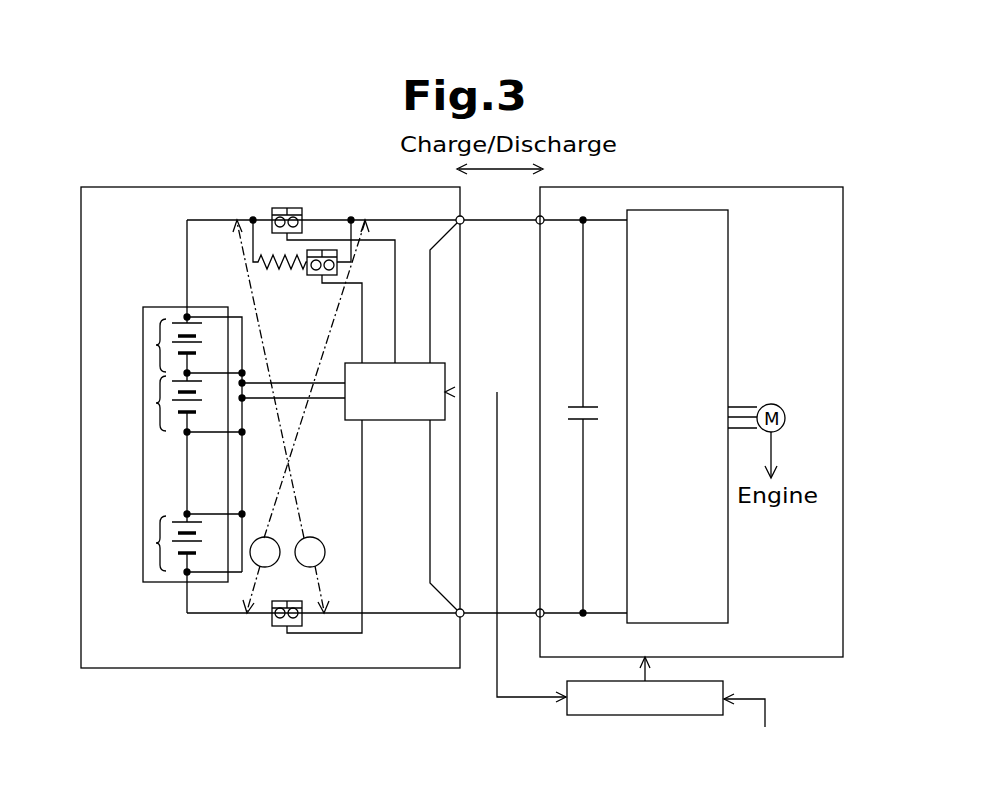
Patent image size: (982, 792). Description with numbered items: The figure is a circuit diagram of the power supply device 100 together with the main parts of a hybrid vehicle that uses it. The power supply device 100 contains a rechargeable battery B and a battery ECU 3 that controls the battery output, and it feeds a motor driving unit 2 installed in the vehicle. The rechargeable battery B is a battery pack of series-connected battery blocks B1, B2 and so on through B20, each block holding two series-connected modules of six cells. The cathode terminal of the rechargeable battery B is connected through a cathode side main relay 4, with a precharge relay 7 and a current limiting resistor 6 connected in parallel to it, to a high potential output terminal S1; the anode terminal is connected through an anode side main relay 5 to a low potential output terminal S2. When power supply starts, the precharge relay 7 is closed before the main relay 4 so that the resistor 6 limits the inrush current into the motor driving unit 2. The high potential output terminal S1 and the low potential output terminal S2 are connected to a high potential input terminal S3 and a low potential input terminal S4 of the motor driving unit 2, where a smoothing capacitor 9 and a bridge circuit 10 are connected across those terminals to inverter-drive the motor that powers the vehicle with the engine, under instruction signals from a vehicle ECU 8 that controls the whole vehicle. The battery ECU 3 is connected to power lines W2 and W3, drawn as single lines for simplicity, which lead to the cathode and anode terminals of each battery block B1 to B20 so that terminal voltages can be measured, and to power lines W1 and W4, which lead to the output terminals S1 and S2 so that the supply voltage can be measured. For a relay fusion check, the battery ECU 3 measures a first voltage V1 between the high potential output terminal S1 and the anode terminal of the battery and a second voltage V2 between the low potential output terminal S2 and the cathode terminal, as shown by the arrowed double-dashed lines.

The power supply device 100 is at (180, 186).
The motor driving unit 2 is at (706, 186).
The battery ECU 3 is at (440, 363).
The cathode side main relay 4 is at (292, 208).
The anode side main relay 5 is at (276, 627).
The current limiting resistor 6 is at (282, 268).
The precharge relay 7 is at (314, 278).
The vehicle ECU 8 is at (725, 684).
The smoothing capacitor 9 is at (568, 411).
The bridge circuit 10 is at (729, 285).
The rechargeable battery B is at (165, 305).
The battery block B1 is at (156, 345).
The battery block B2 is at (156, 403).
The battery block B20 is at (156, 543).
The power line W1 is at (431, 292).
The power line W2 is at (290, 382).
The power line W3 is at (325, 400).
The power line W4 is at (431, 507).
The high potential output terminal S1 is at (463, 225).
The low potential output terminal S2 is at (458, 618).
The high potential input terminal S3 is at (537, 225).
The low potential input terminal S4 is at (538, 618).
The first voltage V1 is at (306, 416).
The second voltage V2 is at (281, 416).